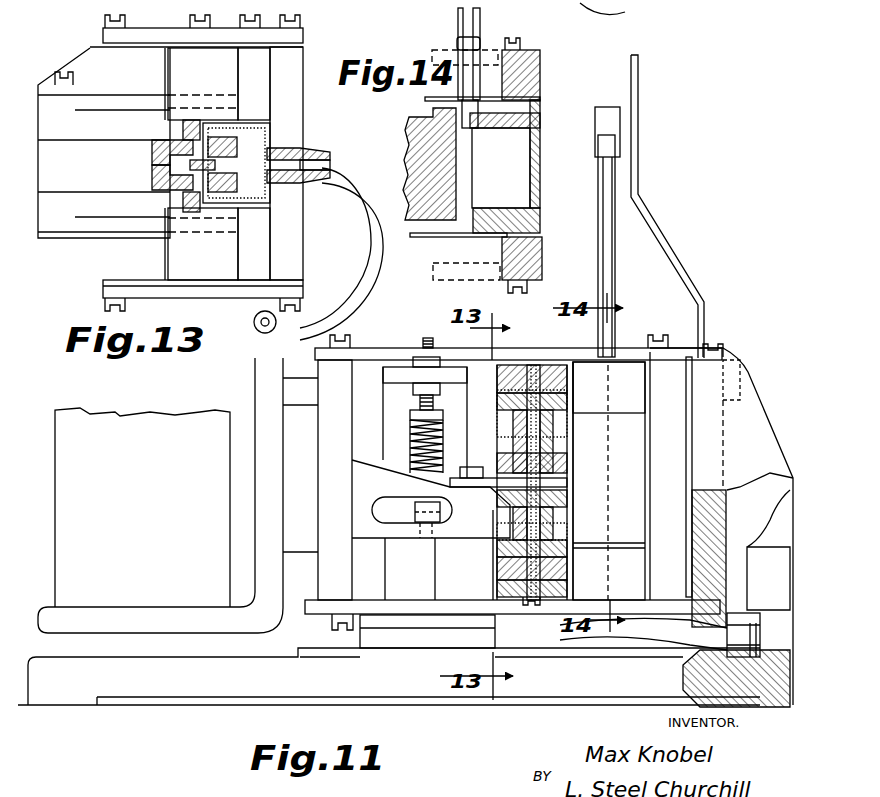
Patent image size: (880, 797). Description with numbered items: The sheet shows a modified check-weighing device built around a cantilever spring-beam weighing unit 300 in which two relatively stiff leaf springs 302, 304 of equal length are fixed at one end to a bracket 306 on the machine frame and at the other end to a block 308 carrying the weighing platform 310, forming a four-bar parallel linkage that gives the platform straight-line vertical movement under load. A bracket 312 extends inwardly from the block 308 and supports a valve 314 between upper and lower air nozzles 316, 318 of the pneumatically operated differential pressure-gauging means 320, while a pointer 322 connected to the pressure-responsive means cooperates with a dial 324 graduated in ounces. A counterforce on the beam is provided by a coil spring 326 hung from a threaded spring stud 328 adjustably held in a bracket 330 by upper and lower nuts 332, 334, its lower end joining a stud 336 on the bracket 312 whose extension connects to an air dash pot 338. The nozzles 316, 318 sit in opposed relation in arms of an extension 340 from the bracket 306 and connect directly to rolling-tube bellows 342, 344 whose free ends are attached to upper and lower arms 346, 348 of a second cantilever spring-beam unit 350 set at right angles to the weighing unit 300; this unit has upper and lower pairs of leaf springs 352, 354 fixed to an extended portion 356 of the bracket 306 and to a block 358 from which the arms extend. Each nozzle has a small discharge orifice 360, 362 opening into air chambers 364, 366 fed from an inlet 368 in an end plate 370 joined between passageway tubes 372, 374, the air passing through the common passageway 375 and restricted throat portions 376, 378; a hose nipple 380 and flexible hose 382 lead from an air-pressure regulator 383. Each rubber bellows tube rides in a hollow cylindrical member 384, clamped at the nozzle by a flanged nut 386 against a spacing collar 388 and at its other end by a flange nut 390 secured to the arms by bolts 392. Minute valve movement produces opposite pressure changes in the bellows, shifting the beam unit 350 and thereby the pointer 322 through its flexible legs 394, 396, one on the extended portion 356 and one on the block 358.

In FIG. 11, the cantilever spring-beam weighing unit 300 is at (370, 340).
In FIG. 13, the cantilever leaf spring 302 is at (105, 36).
In FIG. 11, the cantilever leaf spring 302 is at (375, 352).
In FIG. 13, the cantilever leaf spring 304 is at (115, 298).
In FIG. 11, the cantilever leaf spring 304 is at (362, 601).
In FIG. 13, the bracket 306 is at (93, 52).
In FIG. 11, the bracket 306 is at (678, 455).
In FIG. 11, the block 308 is at (330, 473).
In FIG. 11, the weighing platform 310 is at (163, 625).
In FIG. 11, the bracket 312 is at (367, 488).
In FIG. 13, the valve 314 is at (224, 165).
In FIG. 11, the valve 314 is at (567, 482).
In FIG. 13, the upper air nozzle 316 is at (182, 130).
In FIG. 11, the upper air nozzle 316 is at (567, 452).
In FIG. 13, the lower air nozzle 318 is at (182, 197).
In FIG. 11, the lower air nozzle 318 is at (570, 515).
In FIG. 13, the pneumatically operated differential pressure-gauging means 320 is at (160, 56).
In FIG. 14, the pointer 322 is at (457, 28).
In FIG. 11, the pointer 322 is at (598, 193).
In FIG. 11, the dial 324 is at (638, 152).
In FIG. 11, the coil spring 326 is at (410, 440).
In FIG. 11, the threaded spring stud 328 is at (427, 338).
In FIG. 11, the bracket 330 is at (387, 412).
In FIG. 11, the upper nut 332 is at (383, 368).
In FIG. 11, the lower nut 334 is at (413, 388).
In FIG. 11, the stud 336 is at (422, 557).
In FIG. 11, the air dash pot 338 is at (400, 648).
In FIG. 13, the extension 340 is at (104, 166).
In FIG. 11, the extension 340 is at (567, 465).
In FIG. 11, the upper rolling-tube bellows 342 is at (582, 410).
In FIG. 11, the lower rolling-tube bellows 344 is at (568, 565).
In FIG. 14, the upper arm 346 is at (440, 50).
In FIG. 11, the upper arm 346 is at (507, 360).
In FIG. 13, the lower arm 348 is at (236, 283).
In FIG. 14, the lower arm 348 is at (432, 272).
In FIG. 11, the lower arm 348 is at (495, 614).
In FIG. 13, the second cantilever spring-beam unit 350 is at (40, 257).
In FIG. 11, the second cantilever spring-beam unit 350 is at (640, 372).
In FIG. 13, the upper pair of leaf springs 352 is at (88, 95).
In FIG. 14, the upper pair of leaf springs 352 is at (550, 76).
In FIG. 11, the upper pair of leaf springs 352 is at (633, 417).
In FIG. 13, the lower pair of leaf springs 354 is at (95, 235).
In FIG. 14, the lower pair of leaf springs 354 is at (458, 237).
In FIG. 11, the lower pair of leaf springs 354 is at (600, 538).
In FIG. 13, the extended portion 356 is at (45, 115).
In FIG. 14, the extended portion 356 is at (406, 147).
In FIG. 13, the block 358 is at (275, 110).
In FIG. 14, the block 358 is at (550, 112).
In FIG. 11, the block 358 is at (637, 477).
In FIG. 13, the discharge orifice 360 is at (152, 152).
In FIG. 11, the discharge orifice 360 is at (497, 460).
In FIG. 13, the discharge orifice 362 is at (152, 178).
In FIG. 11, the discharge orifice 362 is at (497, 492).
In FIG. 13, the upper air chamber 364 is at (200, 130).
In FIG. 11, the upper air chamber 364 is at (513, 446).
In FIG. 13, the lower air chamber 366 is at (200, 200).
In FIG. 11, the lower air chamber 366 is at (497, 510).
In FIG. 13, the inlet 368 is at (285, 150).
In FIG. 13, the end plate 370 is at (300, 210).
In FIG. 13, the passageway tube 372 is at (265, 130).
In FIG. 13, the passageway tube 374 is at (300, 228).
In FIG. 13, the common passageway 375 is at (300, 190).
In FIG. 13, the restricted throat portion 376 is at (220, 126).
In FIG. 13, the restricted throat portion 378 is at (240, 215).
In FIG. 13, the hose nipple 380 is at (300, 162).
In FIG. 13, the flexible hose 382 is at (362, 172).
In FIG. 14, the flexible hose 382 is at (620, 12).
In FIG. 11, the flexible hose 382 is at (634, 645).
In FIG. 11, the air-pressure regulator 383 is at (780, 540).
In FIG. 13, the hollow cylindrical member 384 is at (166, 78).
In FIG. 11, the hollow cylindrical member 384 is at (585, 386).
In FIG. 11, the flanged nut 386 is at (500, 424).
In FIG. 11, the spacing collar 388 is at (567, 440).
In FIG. 11, the flange nut 390 is at (500, 562).
In FIG. 13, the bolt 392 is at (222, 17).
In FIG. 11, the bolt 392 is at (537, 355).
In FIG. 14, the pointer leg 394 is at (462, 68).
In FIG. 14, the pointer leg 396 is at (488, 75).